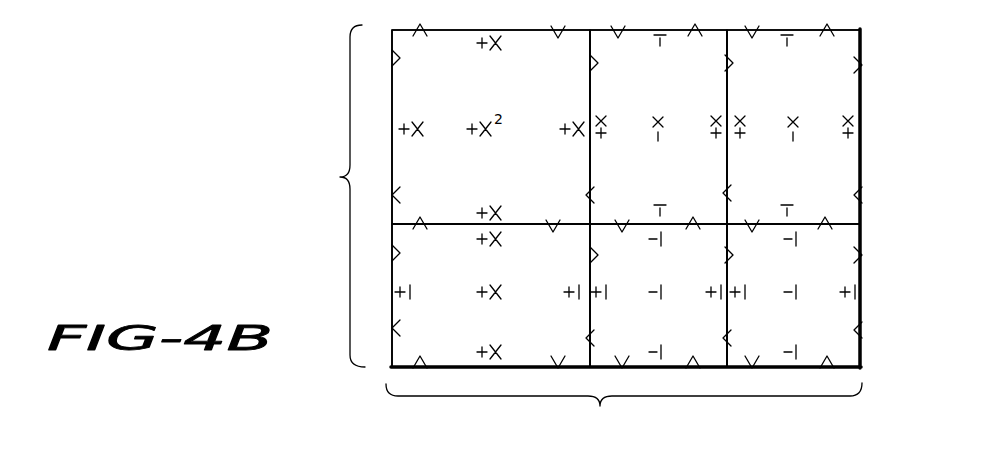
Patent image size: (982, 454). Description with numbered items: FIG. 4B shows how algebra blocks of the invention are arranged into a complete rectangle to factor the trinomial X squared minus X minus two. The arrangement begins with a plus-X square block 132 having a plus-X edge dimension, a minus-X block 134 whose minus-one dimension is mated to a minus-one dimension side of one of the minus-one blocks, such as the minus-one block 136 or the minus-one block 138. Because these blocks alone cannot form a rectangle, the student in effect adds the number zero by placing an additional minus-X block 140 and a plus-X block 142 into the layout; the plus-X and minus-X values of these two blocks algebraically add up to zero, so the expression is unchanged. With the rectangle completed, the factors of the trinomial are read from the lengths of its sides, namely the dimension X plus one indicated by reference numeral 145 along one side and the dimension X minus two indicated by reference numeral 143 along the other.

The +X square block 132 is at (462, 30).
The -X block 134 is at (655, 30).
The additional -X block 140 is at (797, 30).
The +X block 142 is at (477, 368).
The -1 block 136 is at (652, 368).
The -1 block 138 is at (760, 368).
The dimension X-2 143 is at (624, 404).
The dimension X+1 145 is at (306, 196).